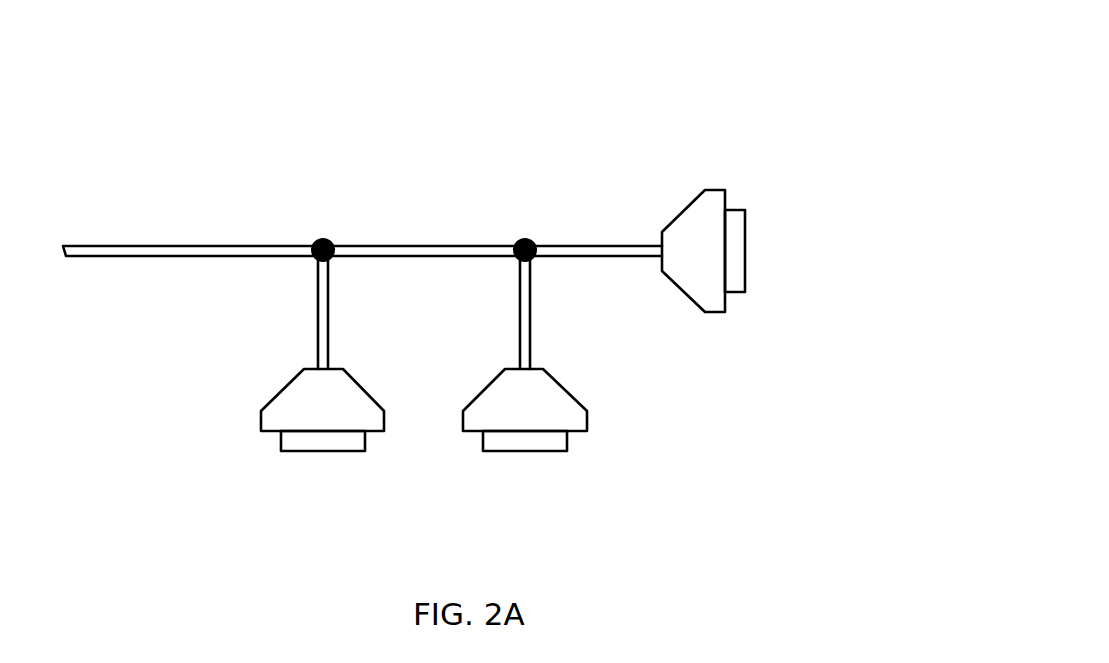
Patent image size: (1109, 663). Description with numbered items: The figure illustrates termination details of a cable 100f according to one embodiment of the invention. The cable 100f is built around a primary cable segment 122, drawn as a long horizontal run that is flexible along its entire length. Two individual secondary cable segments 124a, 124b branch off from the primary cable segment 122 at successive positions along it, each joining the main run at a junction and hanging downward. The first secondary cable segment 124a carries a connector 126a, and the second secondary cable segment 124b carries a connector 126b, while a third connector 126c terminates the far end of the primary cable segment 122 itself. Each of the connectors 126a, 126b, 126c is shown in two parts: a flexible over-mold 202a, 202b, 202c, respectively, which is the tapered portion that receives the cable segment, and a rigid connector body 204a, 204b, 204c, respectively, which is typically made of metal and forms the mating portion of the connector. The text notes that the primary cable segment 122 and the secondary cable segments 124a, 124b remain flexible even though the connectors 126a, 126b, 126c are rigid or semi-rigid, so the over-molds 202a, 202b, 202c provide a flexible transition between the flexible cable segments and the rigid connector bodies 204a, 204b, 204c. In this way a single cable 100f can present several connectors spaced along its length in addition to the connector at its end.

The cable 100f is at (702, 63).
The primary cable segment 122 is at (748, 123).
The secondary cable segment 124a is at (318, 337).
The secondary cable segment 124b is at (520, 335).
The connector 126a is at (215, 460).
The connector 126b is at (633, 447).
The connector 126c is at (751, 333).
The flexible over-mold 202a is at (280, 393).
The flexible over-mold 202b is at (483, 392).
The flexible over-mold 202c is at (687, 207).
The rigid connector body 204a is at (303, 452).
The rigid connector body 204b is at (505, 452).
The rigid connector body 204c is at (748, 230).